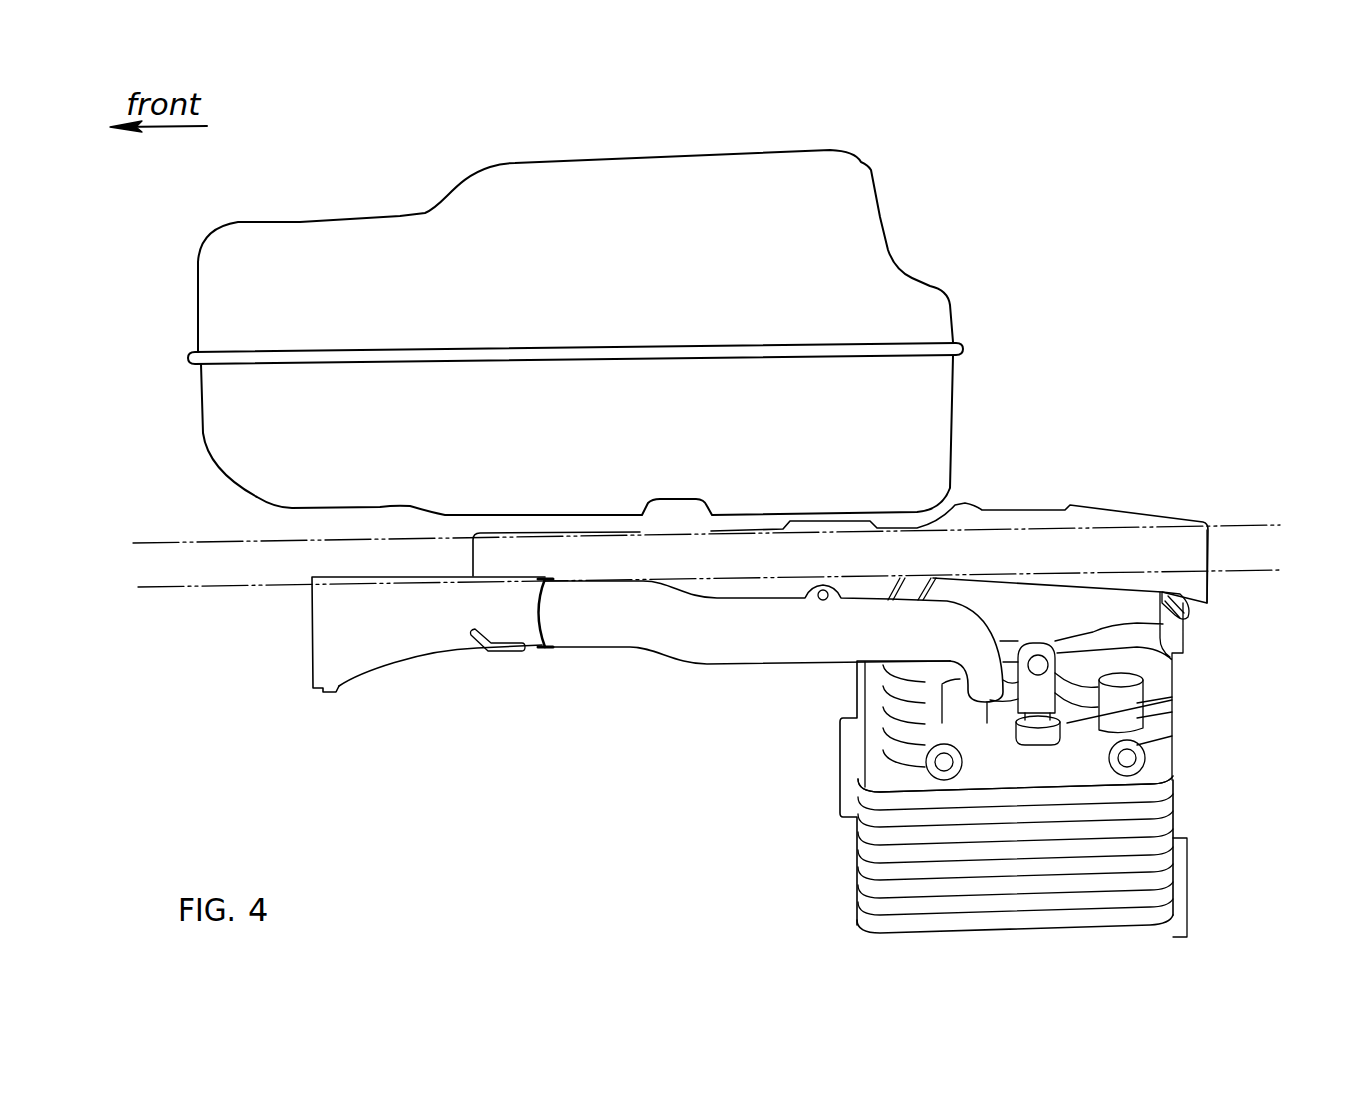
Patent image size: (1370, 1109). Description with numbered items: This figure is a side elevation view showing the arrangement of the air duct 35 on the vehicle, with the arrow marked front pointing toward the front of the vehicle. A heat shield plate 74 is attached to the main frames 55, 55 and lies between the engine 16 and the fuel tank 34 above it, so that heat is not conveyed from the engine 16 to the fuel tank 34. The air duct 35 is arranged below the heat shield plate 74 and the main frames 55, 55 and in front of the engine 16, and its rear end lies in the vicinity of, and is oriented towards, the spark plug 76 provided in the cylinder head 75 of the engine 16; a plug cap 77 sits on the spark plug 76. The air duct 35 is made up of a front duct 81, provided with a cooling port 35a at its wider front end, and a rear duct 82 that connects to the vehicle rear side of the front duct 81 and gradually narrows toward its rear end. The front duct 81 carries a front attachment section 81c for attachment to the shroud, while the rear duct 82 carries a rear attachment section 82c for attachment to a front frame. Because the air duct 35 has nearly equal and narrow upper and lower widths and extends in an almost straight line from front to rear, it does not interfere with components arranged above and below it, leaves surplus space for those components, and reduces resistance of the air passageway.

The fuel tank 34 is at (881, 217).
The heat shield plate 74 is at (1093, 505).
The main frame 55 is at (1250, 525).
The air duct 35 is at (388, 713).
The cooling port 35a is at (312, 634).
The front duct 81 is at (388, 665).
The front attachment section 81c is at (502, 655).
The rear duct 82 is at (770, 604).
The rear attachment section 82c is at (828, 588).
The engine 16 is at (850, 866).
The plug cap 77 is at (1163, 624).
The spark plug 76 is at (1172, 700).
The cylinder head 75 is at (1176, 781).